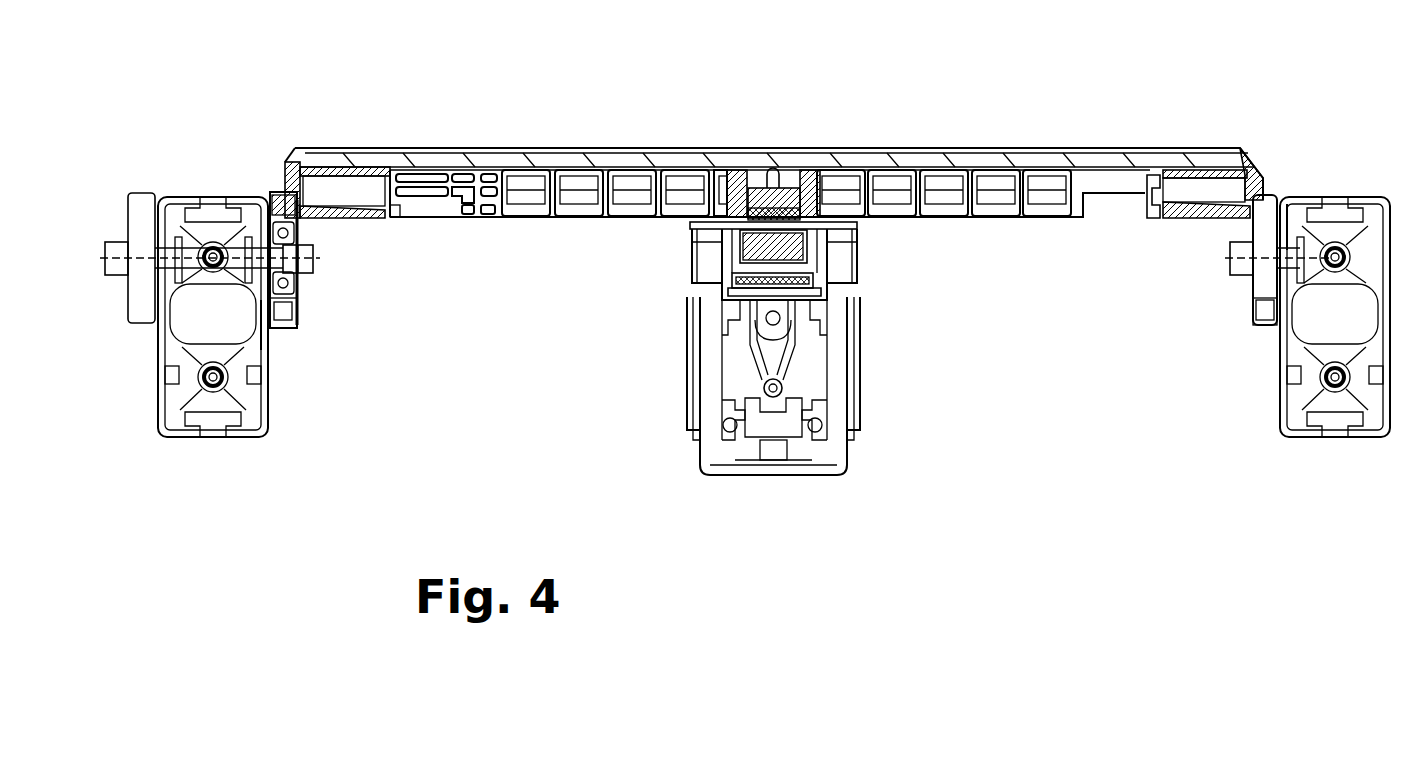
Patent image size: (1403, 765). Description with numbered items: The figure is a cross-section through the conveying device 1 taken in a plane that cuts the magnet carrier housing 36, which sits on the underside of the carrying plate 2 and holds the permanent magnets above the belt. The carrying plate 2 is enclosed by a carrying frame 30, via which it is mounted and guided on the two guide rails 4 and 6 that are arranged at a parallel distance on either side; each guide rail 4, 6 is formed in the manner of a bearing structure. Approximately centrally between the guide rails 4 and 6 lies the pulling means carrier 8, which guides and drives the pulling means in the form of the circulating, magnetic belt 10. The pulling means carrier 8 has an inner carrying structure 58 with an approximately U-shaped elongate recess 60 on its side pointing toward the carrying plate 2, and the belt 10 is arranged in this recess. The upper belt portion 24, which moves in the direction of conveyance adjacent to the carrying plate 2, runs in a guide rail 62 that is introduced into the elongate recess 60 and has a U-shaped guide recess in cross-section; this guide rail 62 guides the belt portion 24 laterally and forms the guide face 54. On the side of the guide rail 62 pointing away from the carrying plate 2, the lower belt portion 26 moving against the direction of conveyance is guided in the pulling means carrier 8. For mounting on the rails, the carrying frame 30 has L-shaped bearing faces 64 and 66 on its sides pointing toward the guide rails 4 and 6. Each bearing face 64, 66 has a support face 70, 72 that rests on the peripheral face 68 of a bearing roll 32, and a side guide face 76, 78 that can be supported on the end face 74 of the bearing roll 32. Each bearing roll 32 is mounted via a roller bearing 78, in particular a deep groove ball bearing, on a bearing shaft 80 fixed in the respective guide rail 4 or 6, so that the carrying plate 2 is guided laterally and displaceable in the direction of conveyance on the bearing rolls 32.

The conveying device 1 is at (1090, 34).
The carrying plate 2 is at (983, 152).
The guide rail 4 is at (203, 438).
The guide rail 6 is at (1326, 437).
The pulling means carrier 8 is at (838, 438).
The belt 10 is at (830, 170).
The upper belt portion 24 is at (750, 172).
The lower belt portion 26 is at (722, 308).
The carrying frame 30 is at (1263, 182).
The bearing rolls 32 is at (297, 316).
The magnet carrier housing 36 is at (810, 172).
The guide face 54 is at (783, 172).
The inner carrying structure 58 is at (783, 392).
The elongate recess 60 is at (823, 245).
The guide rail 62 is at (727, 238).
The L-shaped bearing face 64 is at (328, 193).
The L-shaped bearing face 66 is at (1234, 193).
The peripheral face 68 is at (268, 330).
The support face 70 is at (268, 192).
The support face 72 is at (1268, 215).
The end face 74 is at (296, 325).
The side guide face 76 is at (290, 234).
The roller bearing 78 is at (262, 232).
The bearing shaft 80 is at (300, 262).